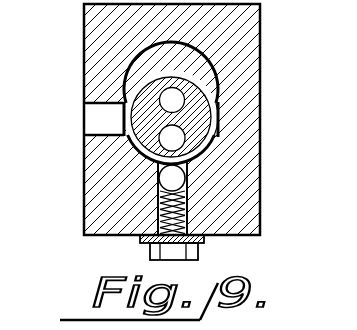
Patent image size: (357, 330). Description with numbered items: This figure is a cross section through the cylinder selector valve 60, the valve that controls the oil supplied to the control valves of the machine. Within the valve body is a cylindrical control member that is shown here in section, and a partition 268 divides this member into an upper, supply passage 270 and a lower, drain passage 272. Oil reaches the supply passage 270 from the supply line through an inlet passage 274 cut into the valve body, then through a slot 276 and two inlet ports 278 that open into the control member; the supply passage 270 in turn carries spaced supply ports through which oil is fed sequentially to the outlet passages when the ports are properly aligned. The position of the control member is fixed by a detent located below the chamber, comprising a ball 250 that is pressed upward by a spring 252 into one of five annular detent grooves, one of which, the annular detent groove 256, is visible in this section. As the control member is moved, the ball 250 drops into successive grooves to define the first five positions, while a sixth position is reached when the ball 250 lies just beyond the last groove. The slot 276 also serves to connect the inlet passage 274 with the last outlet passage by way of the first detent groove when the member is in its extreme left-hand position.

The cylinder selector valve 60 is at (262, 110).
The ball 250 is at (186, 181).
The spring 252 is at (204, 239).
The annular detent groove 256 is at (190, 162).
The partition 268 is at (219, 137).
The supply passage 270 is at (186, 99).
The drain passage 272 is at (126, 142).
The inlet passage 274 is at (84, 103).
The slot 276 is at (124, 130).
The inlet ports 278 is at (124, 113).